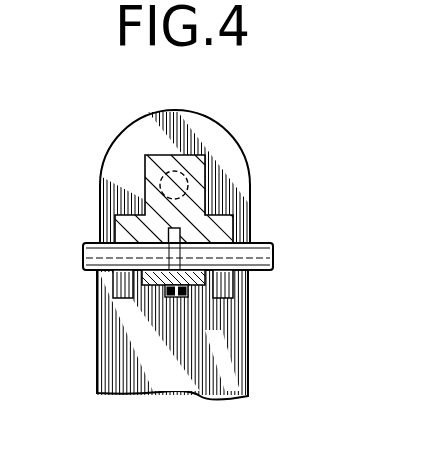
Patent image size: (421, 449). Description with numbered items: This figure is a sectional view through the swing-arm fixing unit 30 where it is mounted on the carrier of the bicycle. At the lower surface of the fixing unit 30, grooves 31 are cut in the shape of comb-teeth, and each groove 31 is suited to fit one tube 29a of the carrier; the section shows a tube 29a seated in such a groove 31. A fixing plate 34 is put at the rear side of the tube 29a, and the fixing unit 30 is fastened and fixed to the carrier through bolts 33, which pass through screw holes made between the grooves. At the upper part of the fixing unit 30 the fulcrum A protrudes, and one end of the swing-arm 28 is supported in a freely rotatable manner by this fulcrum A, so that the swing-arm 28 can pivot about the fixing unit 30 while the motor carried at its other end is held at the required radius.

The swing-arm 28 is at (120, 348).
The tube 29a is at (267, 257).
The swing-arm fixing unit 30 is at (232, 182).
The groove 31 is at (235, 290).
The bolt 33 is at (190, 297).
The fixing plate 34 is at (118, 288).
The fulcrum A is at (160, 183).